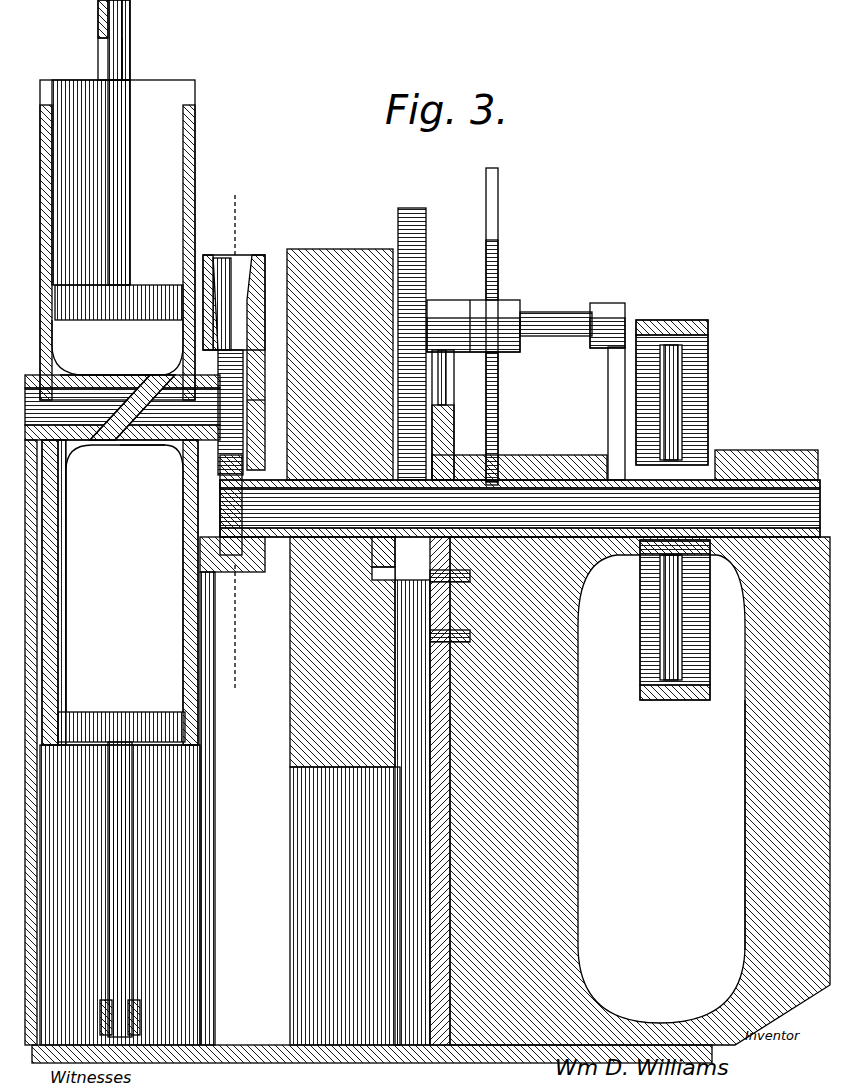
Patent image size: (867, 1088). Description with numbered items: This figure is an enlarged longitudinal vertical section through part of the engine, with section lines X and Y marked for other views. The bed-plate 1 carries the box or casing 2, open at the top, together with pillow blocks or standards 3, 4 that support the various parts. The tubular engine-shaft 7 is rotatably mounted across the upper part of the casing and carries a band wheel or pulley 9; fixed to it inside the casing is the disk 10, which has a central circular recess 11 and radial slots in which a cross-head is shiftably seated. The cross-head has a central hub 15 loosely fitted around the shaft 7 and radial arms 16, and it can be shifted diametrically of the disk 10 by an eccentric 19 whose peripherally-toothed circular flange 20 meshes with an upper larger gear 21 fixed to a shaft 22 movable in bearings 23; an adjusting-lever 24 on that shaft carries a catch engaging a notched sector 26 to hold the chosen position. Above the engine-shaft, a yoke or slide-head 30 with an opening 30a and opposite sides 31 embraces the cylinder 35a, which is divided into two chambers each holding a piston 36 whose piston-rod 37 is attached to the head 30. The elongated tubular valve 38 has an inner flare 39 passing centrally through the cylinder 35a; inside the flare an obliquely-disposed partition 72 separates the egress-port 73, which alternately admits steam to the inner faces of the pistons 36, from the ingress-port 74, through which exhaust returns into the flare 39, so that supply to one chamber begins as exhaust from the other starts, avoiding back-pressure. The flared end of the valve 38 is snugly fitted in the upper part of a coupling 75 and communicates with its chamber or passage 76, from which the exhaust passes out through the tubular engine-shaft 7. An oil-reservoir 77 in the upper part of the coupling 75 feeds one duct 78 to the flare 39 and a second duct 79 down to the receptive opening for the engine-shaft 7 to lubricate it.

The bed-plate 1 is at (368, 764).
The box or casing 2 is at (245, 791).
The pillow block or standard 3 is at (578, 812).
The pillow block or standard 4 is at (745, 793).
The engine-shaft 7 is at (735, 480).
The band wheel or pulley 9 is at (690, 320).
The disk 10 is at (340, 353).
The central circular recess 11 is at (432, 580).
The central hub 15 is at (342, 652).
The radial arms 16 is at (372, 545).
The eccentric 19 is at (398, 468).
The peripherally-toothed circular flange 20 is at (456, 458).
The gear 21 is at (442, 380).
The shaft 22 is at (556, 312).
The bearings 23 is at (614, 296).
The adjusting-lever 24 is at (500, 306).
The notched sector 26 is at (498, 242).
The yoke or slide-head 30 is at (132, 40).
The opening 30a is at (147, 59).
The sides 31 is at (100, 44).
The cylinder 35a is at (221, 225).
The piston 36 is at (120, 513).
The piston-rod 37 is at (138, 770).
The elongated tubular valve 38 is at (108, 240).
The flare 39 is at (150, 445).
The obliquely-disposed partition 72 is at (135, 388).
The egress-port 73 is at (110, 357).
The ingress-port 74 is at (120, 592).
The coupling 75 is at (266, 362).
The chamber or passage 76 is at (250, 404).
The oil-reservoir 77 is at (234, 299).
The duct 78 is at (227, 391).
The duct 79 is at (231, 304).
The section line x x X is at (520, 505).
The section line y y Y is at (234, 437).